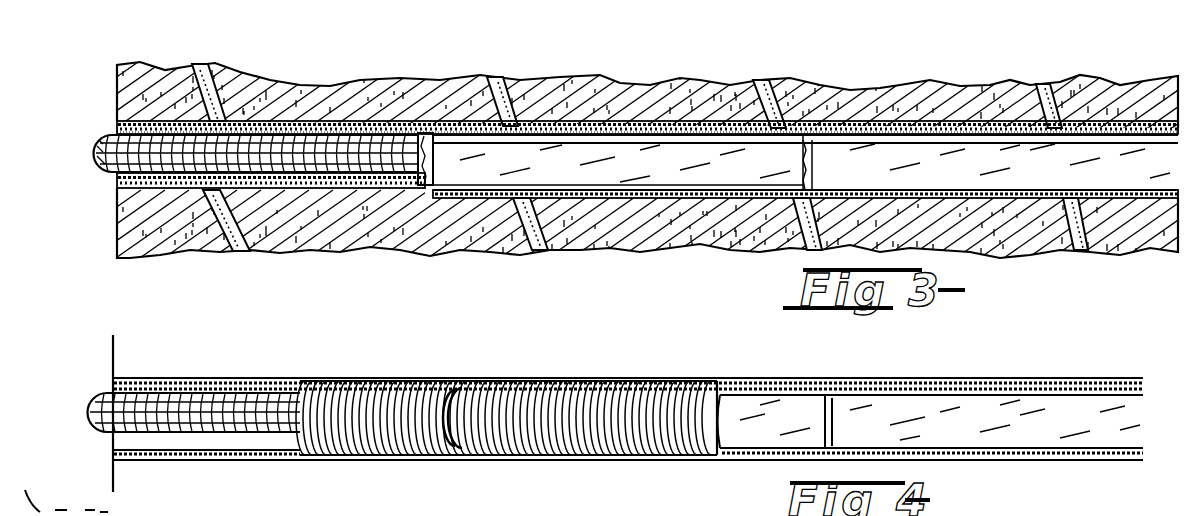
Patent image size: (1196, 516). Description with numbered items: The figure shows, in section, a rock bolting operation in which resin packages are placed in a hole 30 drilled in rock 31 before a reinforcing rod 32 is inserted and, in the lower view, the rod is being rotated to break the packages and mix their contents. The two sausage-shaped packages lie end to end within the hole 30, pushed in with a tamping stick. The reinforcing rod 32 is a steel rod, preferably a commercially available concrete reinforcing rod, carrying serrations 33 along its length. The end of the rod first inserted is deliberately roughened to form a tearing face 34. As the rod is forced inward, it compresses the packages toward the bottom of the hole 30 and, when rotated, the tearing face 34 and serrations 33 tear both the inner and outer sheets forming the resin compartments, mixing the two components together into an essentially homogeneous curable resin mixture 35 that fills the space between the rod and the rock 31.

In FIG. 3, the hole 30 is at (362, 120).
In FIG. 3, the rock 31 is at (460, 93).
In FIG. 3, the reinforcing rod 32 is at (97, 160).
In FIG. 3, the serrations 33 is at (110, 174).
In FIG. 3, the tearing face 34 is at (424, 133).
In FIG. 4, the curable resin mixture 35 is at (557, 392).